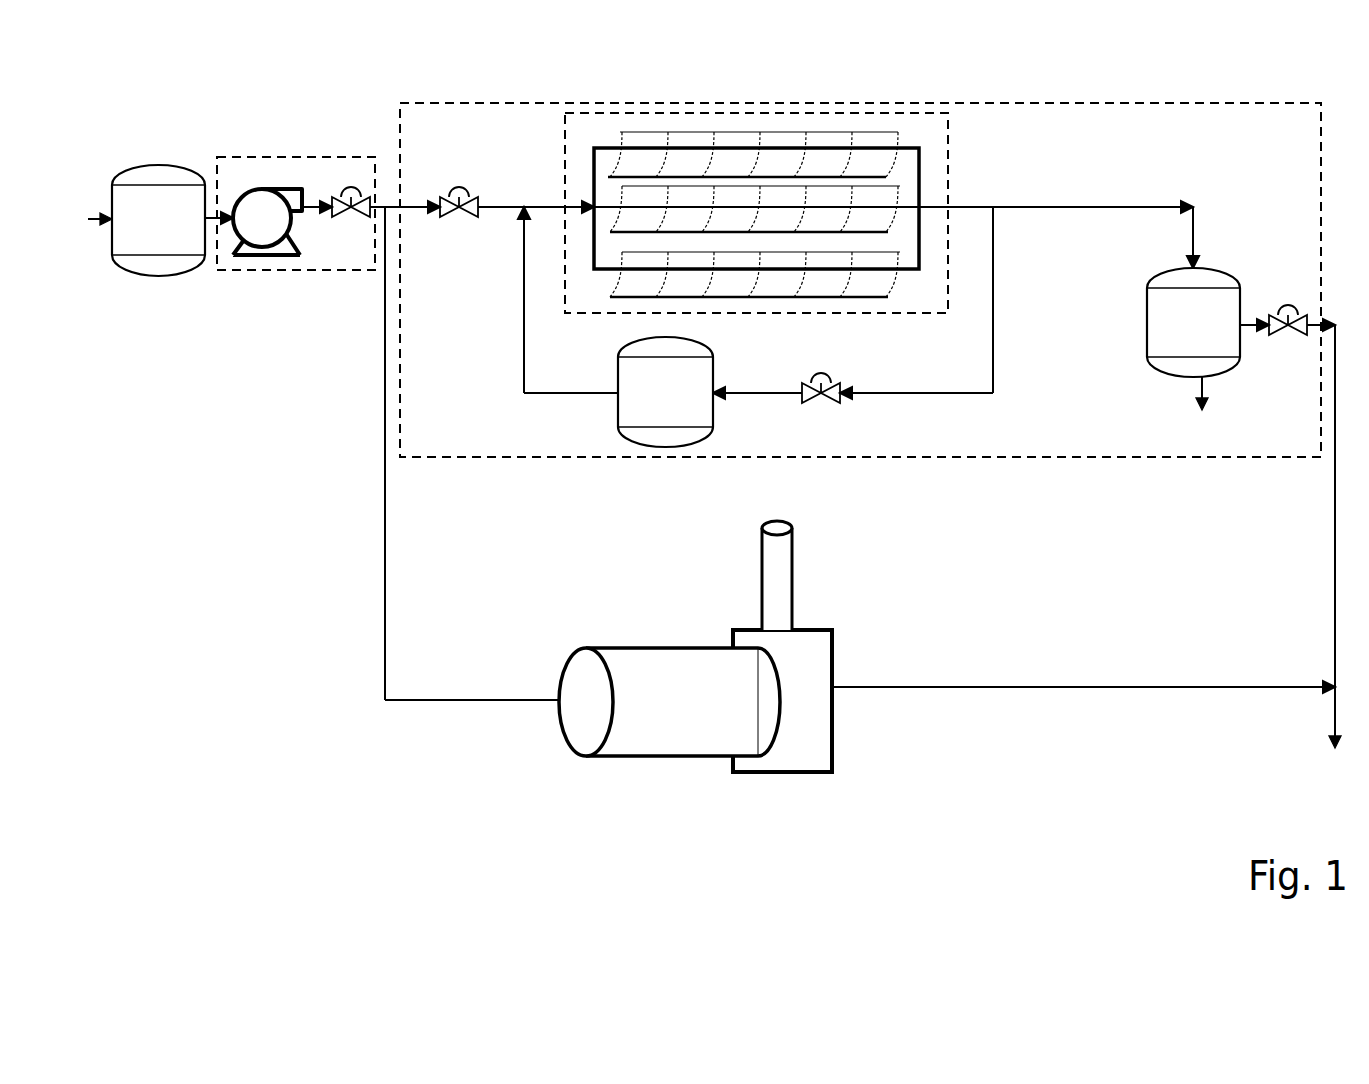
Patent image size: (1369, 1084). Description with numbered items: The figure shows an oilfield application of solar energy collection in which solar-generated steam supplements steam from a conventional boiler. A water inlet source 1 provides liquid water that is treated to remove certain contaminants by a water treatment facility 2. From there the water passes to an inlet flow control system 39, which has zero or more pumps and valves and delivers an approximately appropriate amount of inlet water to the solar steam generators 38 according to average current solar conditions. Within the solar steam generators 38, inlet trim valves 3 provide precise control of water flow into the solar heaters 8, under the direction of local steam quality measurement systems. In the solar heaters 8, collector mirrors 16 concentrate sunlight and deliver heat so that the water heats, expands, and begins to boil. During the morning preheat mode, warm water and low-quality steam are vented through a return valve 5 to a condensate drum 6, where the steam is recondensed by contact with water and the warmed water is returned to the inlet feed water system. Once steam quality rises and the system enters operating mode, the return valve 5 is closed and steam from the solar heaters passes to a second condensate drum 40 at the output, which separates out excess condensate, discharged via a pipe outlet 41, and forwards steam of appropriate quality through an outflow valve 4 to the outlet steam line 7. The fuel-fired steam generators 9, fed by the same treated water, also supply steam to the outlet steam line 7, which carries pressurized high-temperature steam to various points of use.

The water inlet source 1 is at (88, 153).
The water treatment facility 2 is at (140, 166).
The inlet flow control system 39 is at (216, 157).
The solar steam generators 38 is at (396, 127).
The inlet trim valves 3 is at (452, 189).
The solar heaters 8 is at (738, 213).
The collector mirrors 16 is at (886, 176).
The condensate drum 6 is at (624, 345).
The return valve 5 is at (814, 369).
The condensate drum 40 is at (1162, 270).
The outflow valve 4 is at (1277, 300).
The pipe outlet 41 is at (1213, 403).
The fuel-fired steam generators 9 is at (600, 645).
The outlet steam line 7 is at (1328, 737).